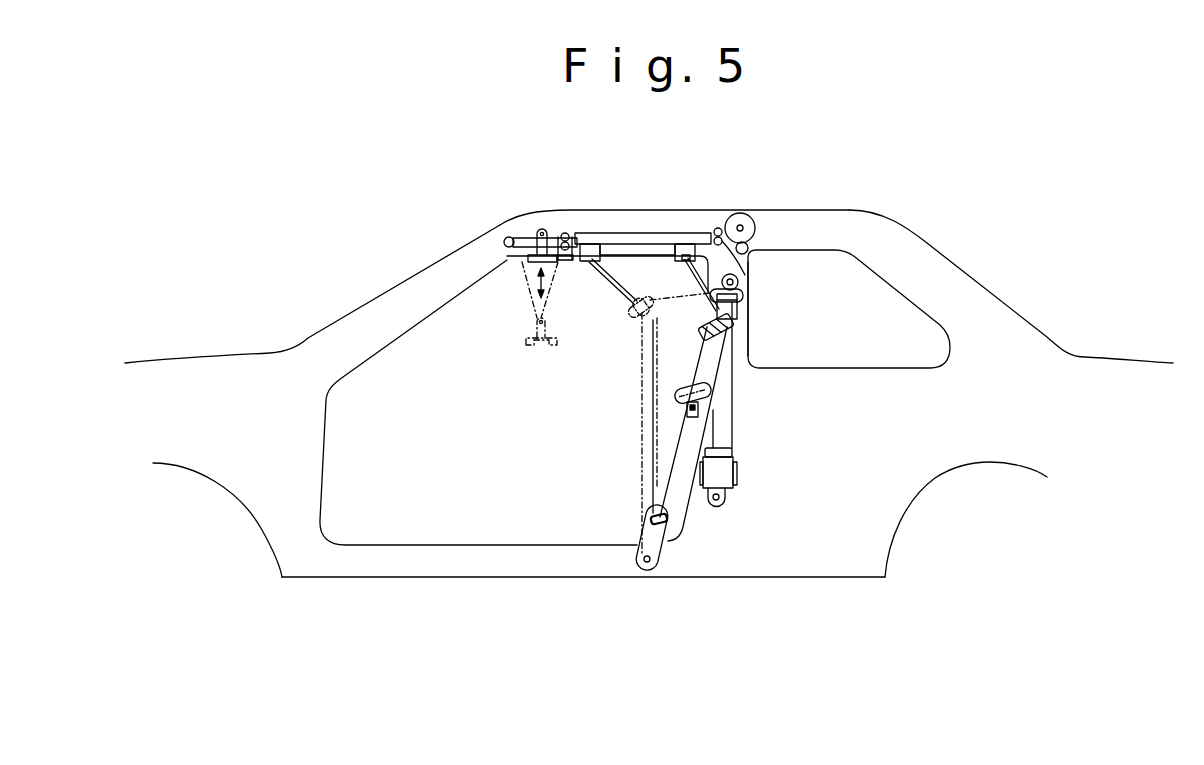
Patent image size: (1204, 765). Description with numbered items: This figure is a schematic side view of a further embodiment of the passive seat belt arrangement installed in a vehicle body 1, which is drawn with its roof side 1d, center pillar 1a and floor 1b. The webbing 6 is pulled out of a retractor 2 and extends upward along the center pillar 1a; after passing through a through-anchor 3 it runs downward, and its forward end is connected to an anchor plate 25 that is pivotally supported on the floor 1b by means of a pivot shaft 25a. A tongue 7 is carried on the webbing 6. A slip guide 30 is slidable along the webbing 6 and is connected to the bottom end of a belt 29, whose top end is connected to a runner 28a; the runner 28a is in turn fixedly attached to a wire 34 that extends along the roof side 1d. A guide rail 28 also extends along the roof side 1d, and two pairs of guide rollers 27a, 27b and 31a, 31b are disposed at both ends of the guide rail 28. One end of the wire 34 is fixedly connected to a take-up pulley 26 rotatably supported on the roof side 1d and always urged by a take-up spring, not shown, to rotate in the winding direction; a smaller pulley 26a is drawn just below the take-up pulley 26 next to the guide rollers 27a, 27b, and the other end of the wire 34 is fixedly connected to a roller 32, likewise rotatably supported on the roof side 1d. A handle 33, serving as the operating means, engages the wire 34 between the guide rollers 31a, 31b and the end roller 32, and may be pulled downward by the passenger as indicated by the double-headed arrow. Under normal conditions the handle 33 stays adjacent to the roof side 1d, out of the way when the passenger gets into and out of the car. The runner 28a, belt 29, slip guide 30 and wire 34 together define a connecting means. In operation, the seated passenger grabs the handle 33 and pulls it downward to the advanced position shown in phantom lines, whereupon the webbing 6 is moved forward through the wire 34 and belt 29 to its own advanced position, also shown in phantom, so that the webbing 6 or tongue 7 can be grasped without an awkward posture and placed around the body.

The body 1 is at (385, 281).
The center pillar 1a is at (744, 333).
The floor 1b is at (470, 579).
The roof side 1d is at (540, 216).
The retractor 2 is at (724, 477).
The through-anchor 3 is at (740, 286).
The webbing 6 is at (707, 365).
The tongue 7 is at (699, 410).
The anchor plate 25 is at (657, 533).
The pivot shaft 25a is at (645, 567).
The take-up pulley 26 is at (743, 220).
The auxiliary pulley 26a is at (748, 252).
The guide roller 27a is at (717, 229).
The guide roller 27b is at (722, 244).
The guide rail 28 is at (628, 238).
The runner 28a is at (686, 252).
The belt 29 is at (686, 276).
The slip guide 30 is at (703, 332).
The guide roller 31a is at (566, 233).
The guide roller 31b is at (570, 256).
The roller 32 is at (506, 237).
The handle 33 is at (535, 265).
The wire 34 is at (528, 236).